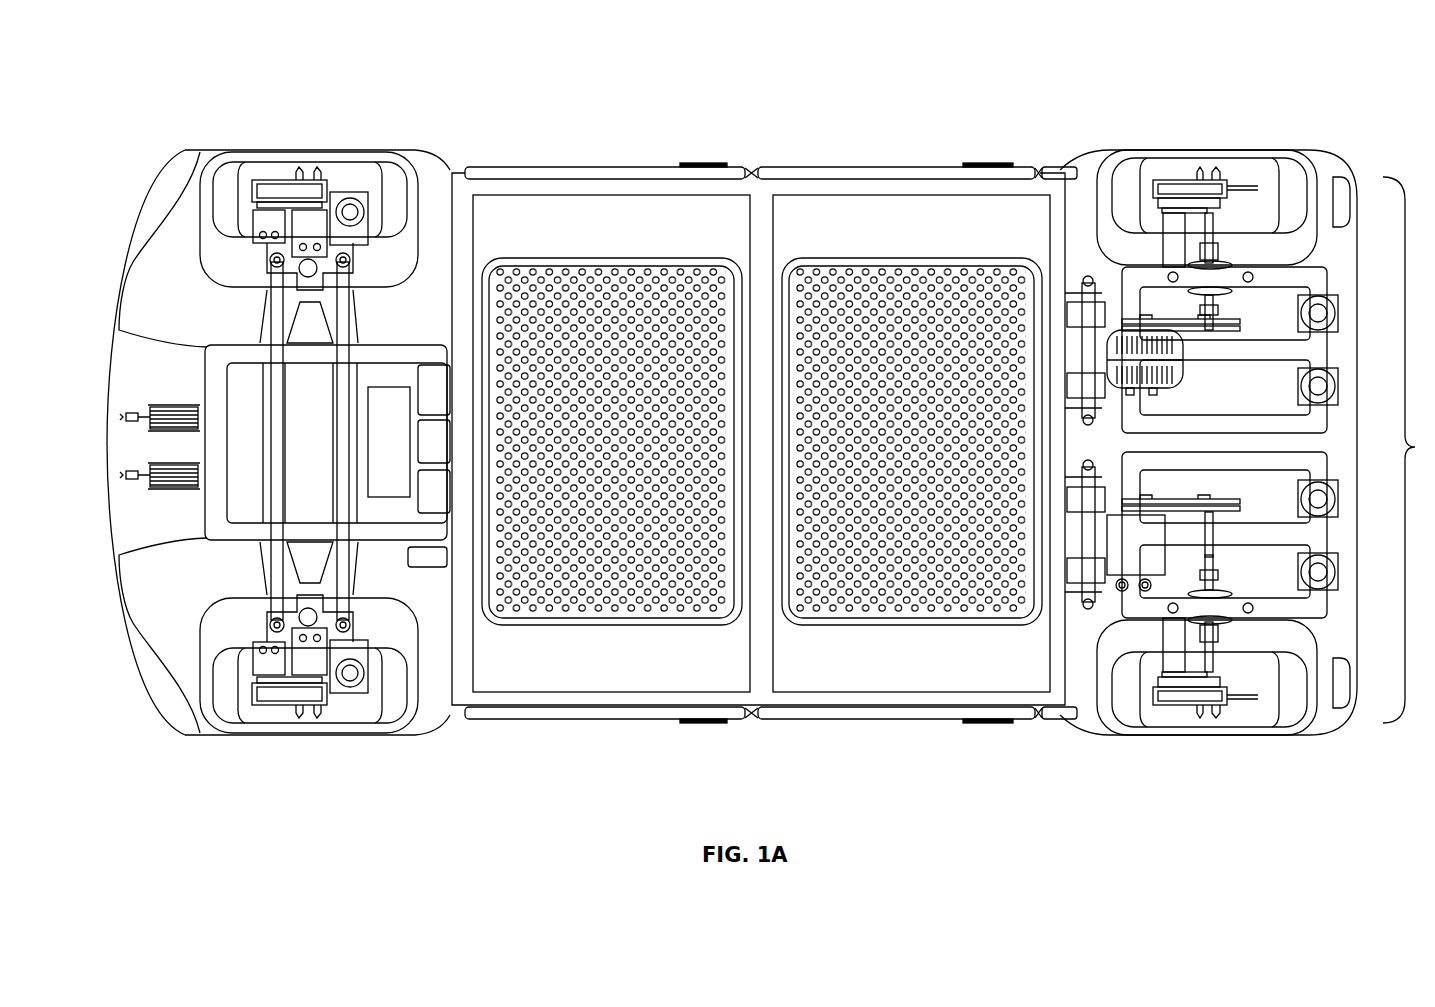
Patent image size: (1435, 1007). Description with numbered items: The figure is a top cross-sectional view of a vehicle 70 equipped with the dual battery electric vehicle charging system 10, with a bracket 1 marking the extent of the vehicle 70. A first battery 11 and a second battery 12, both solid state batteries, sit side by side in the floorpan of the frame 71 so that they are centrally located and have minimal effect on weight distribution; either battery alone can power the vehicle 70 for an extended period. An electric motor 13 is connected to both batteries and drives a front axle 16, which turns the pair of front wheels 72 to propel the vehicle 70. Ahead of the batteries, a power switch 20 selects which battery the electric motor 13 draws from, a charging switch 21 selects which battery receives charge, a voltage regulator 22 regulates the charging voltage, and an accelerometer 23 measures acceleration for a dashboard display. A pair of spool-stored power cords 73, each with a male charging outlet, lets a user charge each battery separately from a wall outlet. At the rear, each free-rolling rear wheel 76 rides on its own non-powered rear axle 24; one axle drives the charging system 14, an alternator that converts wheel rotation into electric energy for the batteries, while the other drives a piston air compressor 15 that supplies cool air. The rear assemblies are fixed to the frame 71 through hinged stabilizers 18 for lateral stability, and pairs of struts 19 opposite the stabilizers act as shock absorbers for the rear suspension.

The vehicle 1 is at (1408, 450).
The dual battery electric vehicle charging system 10 is at (777, 93).
The first battery 11 is at (595, 615).
The second battery 12 is at (915, 270).
The electric motor 13 is at (388, 440).
The charging system 14 is at (1137, 320).
The air compressor 15 is at (1133, 553).
The front axle 16 is at (343, 575).
The hinged stabilizer 18 is at (1072, 250).
The struts 19 is at (1338, 313).
The power switch 20 is at (438, 393).
The charging switch 21 is at (438, 443).
The voltage regulator 22 is at (438, 490).
The accelerometer 23 is at (425, 560).
The rear axle 24 is at (1213, 543).
The vehicle 70 is at (445, 163).
The frame 71 is at (215, 523).
The front wheels 72 is at (262, 160).
The power cords 73 is at (178, 400).
The rear wheels 76 is at (1262, 165).